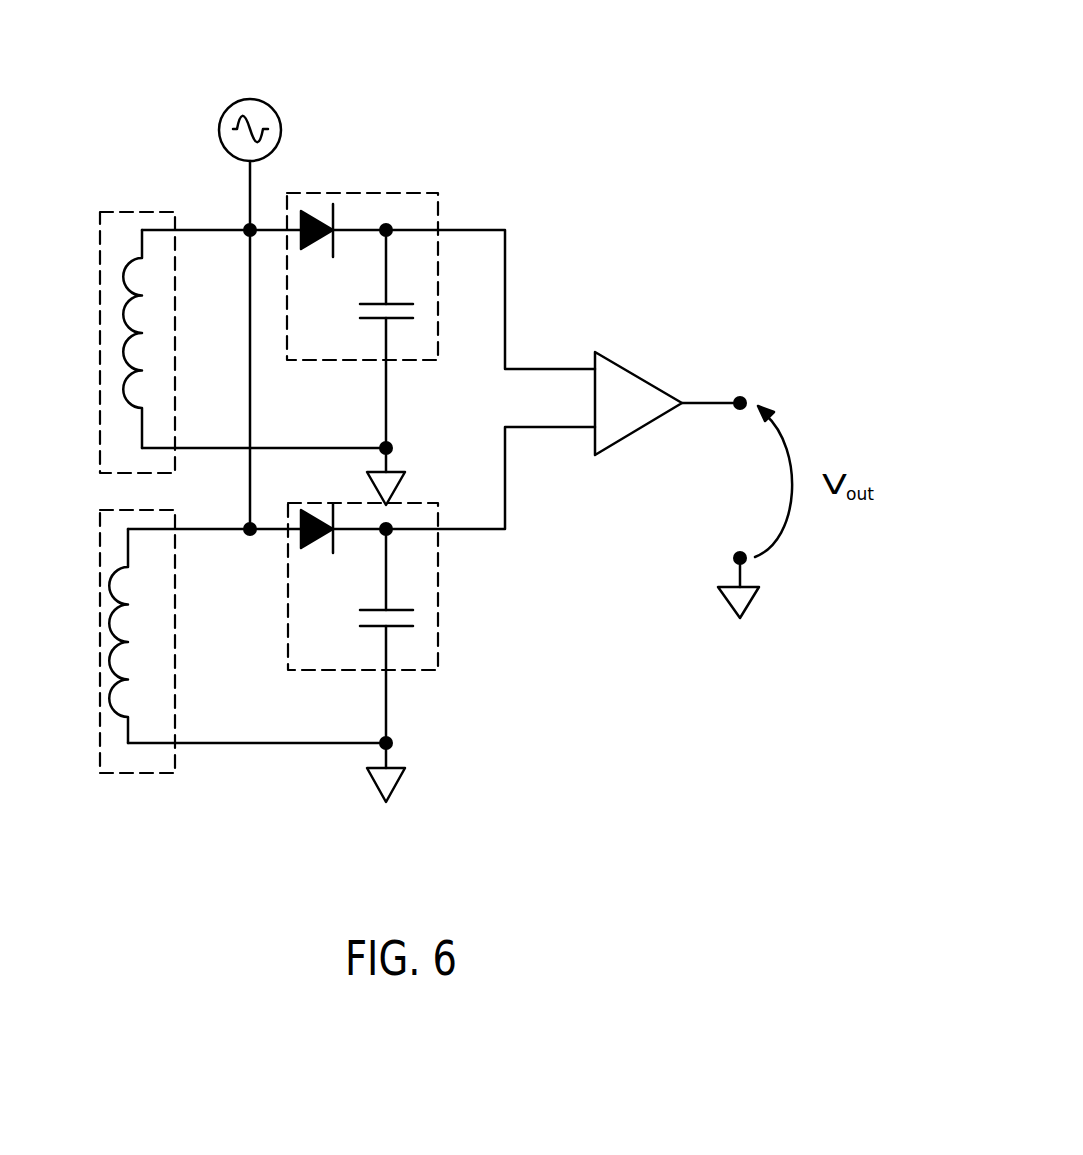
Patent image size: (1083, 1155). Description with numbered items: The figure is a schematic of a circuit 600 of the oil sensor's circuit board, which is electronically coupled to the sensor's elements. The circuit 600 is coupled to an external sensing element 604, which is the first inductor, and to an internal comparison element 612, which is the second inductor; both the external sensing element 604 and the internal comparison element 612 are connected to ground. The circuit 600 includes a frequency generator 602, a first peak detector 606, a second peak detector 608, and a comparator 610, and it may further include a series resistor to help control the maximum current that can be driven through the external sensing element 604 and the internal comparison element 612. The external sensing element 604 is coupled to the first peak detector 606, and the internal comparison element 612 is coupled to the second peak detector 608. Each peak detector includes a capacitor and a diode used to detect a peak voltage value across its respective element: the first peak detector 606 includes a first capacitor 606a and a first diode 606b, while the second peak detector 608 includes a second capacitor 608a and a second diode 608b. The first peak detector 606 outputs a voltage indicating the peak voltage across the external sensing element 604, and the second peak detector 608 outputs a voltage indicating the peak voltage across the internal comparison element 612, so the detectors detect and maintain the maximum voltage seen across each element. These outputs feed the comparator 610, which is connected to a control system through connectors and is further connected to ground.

The circuit 600 is at (816, 51).
The frequency generator 602 is at (246, 99).
The external sensing element 604 is at (108, 212).
The first peak detector 606 is at (391, 258).
The first capacitor 606a is at (378, 304).
The first diode 606b is at (312, 214).
The second peak detector 608 is at (375, 566).
The second capacitor 608a is at (378, 610).
The second diode 608b is at (326, 518).
The comparator 610 is at (637, 372).
The internal comparison element 612 is at (110, 510).